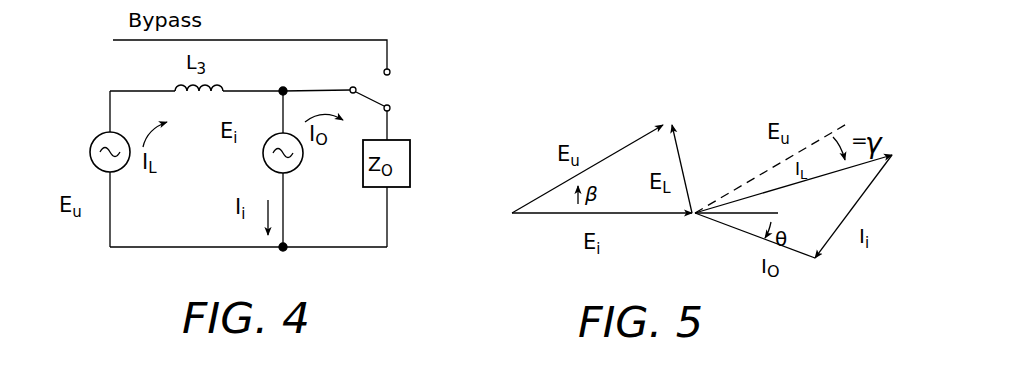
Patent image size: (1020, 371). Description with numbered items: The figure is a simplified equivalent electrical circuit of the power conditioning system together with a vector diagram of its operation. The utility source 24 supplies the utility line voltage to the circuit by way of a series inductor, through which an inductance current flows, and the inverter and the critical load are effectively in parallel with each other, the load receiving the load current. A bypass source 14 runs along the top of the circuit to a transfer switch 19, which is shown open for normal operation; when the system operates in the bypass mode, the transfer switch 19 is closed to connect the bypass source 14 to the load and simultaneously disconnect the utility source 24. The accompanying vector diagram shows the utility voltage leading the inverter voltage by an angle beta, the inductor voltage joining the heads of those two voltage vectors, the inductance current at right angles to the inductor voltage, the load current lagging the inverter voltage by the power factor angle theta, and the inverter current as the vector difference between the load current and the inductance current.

The bypass source 14 is at (301, 23).
The transfer switch 19 is at (375, 100).
The utility source 24 is at (110, 122).